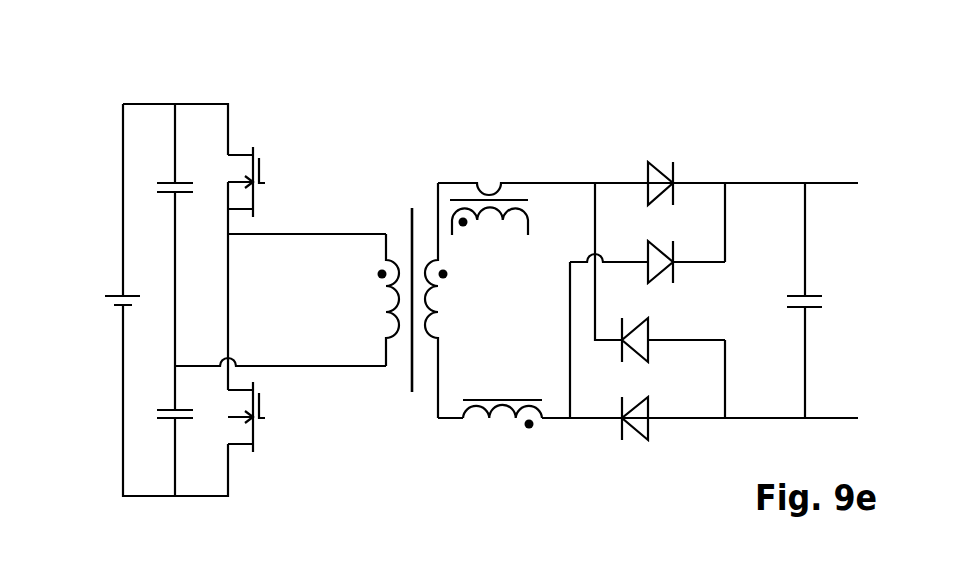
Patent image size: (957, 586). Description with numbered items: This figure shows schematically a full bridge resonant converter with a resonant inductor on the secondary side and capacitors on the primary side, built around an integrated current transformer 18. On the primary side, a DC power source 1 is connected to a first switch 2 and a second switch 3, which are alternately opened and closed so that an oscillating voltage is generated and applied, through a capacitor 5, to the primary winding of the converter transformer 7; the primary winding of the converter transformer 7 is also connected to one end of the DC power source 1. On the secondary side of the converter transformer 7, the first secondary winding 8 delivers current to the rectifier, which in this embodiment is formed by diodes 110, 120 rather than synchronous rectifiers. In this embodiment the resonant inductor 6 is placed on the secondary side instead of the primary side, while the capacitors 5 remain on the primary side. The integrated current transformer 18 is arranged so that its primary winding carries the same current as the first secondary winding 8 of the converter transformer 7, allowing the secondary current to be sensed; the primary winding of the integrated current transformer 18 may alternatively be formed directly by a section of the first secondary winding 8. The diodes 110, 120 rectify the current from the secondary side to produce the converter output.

The DC power source 1 is at (105, 290).
The first switch 2 is at (223, 168).
The second switch 3 is at (228, 432).
The capacitor 5 is at (153, 184).
The inductor 6 is at (505, 420).
The converter transformer 7 is at (393, 217).
The first secondary winding 8 is at (433, 252).
The integrated current transformer 18 is at (471, 146).
The diodes 110 is at (615, 143).
The diodes 120 is at (614, 458).